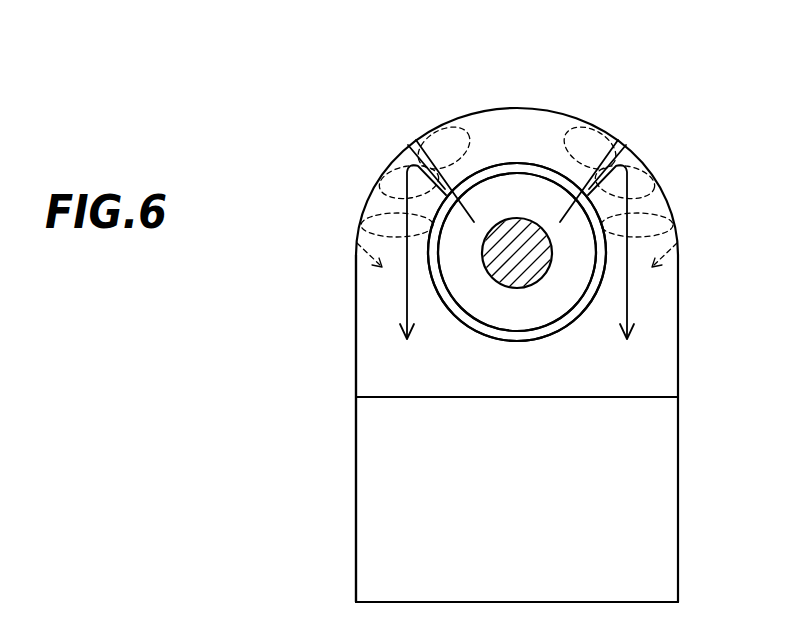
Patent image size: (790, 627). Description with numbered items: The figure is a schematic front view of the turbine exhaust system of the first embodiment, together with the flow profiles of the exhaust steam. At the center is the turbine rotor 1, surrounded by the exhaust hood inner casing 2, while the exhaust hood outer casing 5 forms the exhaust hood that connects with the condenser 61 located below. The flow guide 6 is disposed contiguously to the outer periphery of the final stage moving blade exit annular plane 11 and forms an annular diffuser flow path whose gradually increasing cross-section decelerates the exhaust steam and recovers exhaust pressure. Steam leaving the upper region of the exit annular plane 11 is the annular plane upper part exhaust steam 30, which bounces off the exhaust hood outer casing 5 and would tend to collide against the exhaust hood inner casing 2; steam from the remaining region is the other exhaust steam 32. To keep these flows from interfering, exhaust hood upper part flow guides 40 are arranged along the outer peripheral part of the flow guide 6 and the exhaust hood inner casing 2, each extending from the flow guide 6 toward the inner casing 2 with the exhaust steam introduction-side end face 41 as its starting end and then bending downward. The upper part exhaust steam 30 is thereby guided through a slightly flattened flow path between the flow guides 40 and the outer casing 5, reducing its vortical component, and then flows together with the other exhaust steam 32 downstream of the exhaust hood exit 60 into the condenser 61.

The turbine rotor 1 is at (511, 288).
The exhaust hood inner casing 2 is at (523, 173).
The exhaust hood outer casing 5 is at (560, 113).
The flow guide 6 is at (525, 341).
The final stage moving blade exit annular plane 11 is at (553, 306).
The annular plane upper part exhaust steam 30 is at (473, 132).
The other exhaust steam 32 is at (406, 298).
The exhaust hood upper part flow guide 40 is at (375, 357).
The exhaust steam introduction-side end face 41 is at (606, 128).
The exhaust hood exit 60 is at (393, 386).
The condenser 61 is at (367, 473).